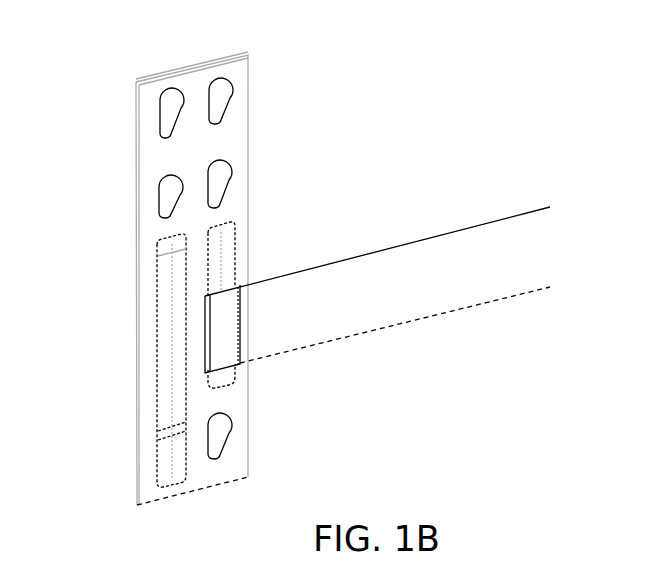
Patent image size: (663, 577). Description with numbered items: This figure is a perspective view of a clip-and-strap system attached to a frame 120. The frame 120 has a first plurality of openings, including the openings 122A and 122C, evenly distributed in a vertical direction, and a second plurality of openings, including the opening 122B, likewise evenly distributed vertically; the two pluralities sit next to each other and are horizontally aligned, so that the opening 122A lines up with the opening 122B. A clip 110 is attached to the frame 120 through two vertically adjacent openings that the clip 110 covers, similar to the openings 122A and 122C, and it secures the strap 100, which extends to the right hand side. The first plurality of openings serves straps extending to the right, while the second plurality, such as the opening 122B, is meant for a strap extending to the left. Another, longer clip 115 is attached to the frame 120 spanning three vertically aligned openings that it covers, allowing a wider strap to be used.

The strap 100 is at (392, 270).
The clip 110 is at (222, 243).
The clip 115 is at (165, 292).
The frame 120 is at (155, 164).
The opening 122A is at (220, 90).
The opening 122B is at (163, 107).
The opening 122C is at (220, 178).